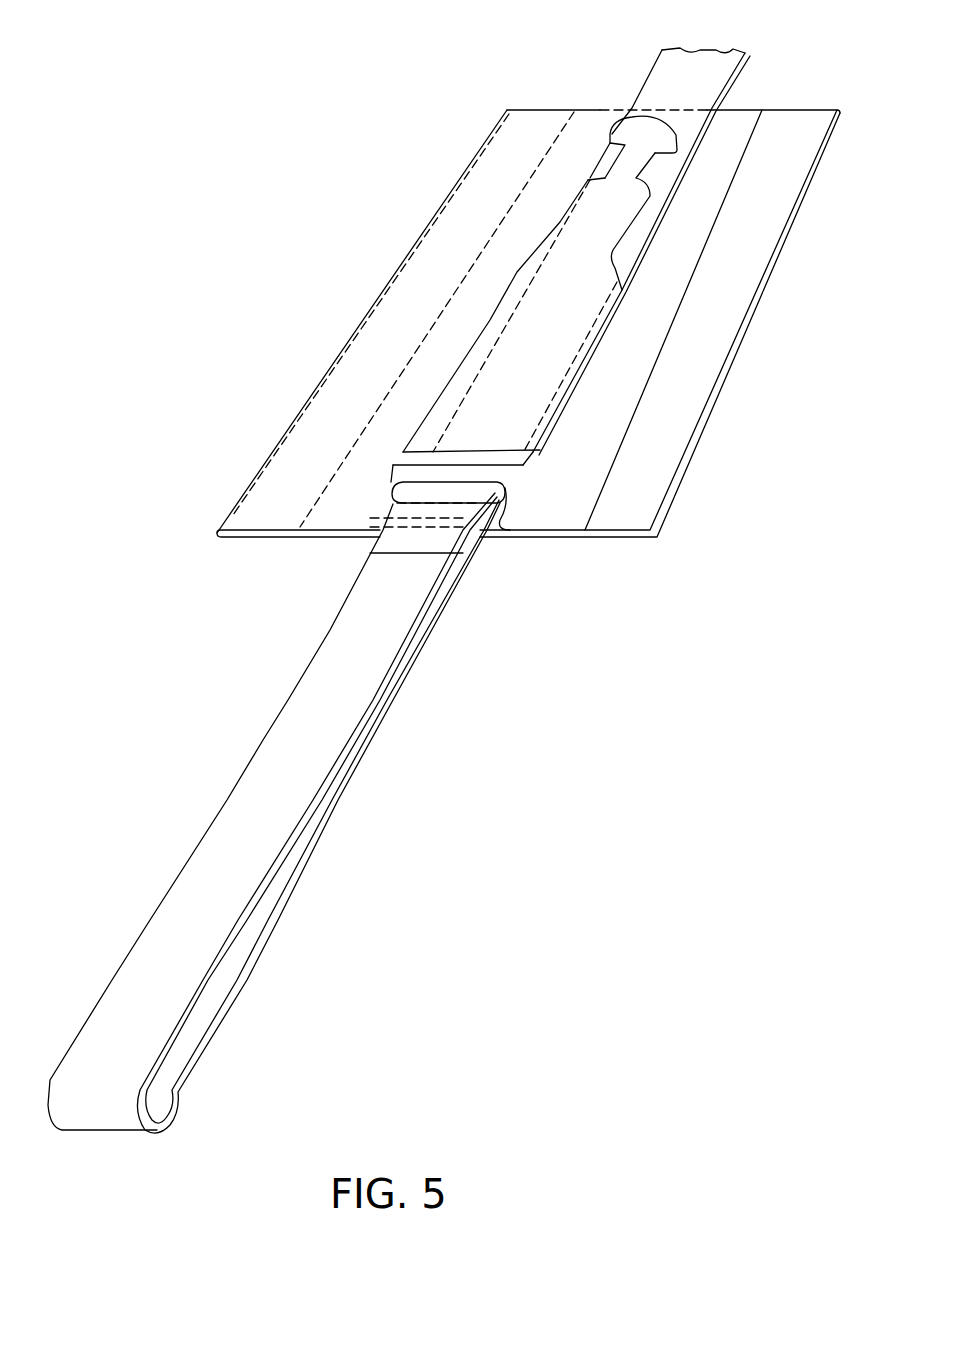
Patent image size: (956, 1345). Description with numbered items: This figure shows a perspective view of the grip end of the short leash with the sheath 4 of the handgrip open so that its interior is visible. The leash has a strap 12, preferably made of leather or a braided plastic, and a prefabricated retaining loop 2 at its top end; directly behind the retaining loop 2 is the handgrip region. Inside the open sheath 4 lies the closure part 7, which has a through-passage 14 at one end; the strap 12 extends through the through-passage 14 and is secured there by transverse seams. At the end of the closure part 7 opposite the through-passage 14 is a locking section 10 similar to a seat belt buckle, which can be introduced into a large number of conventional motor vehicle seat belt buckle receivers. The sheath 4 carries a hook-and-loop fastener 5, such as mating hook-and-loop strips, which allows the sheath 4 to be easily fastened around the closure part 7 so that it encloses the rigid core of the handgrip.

The retaining loop 2 is at (172, 1082).
The sheath 4 is at (403, 278).
The hook-and-loop fastener 5 is at (735, 306).
The closure part 7 is at (592, 210).
The locking section 10 is at (632, 130).
The strap 12 is at (710, 60).
The through-passage 14 is at (393, 477).